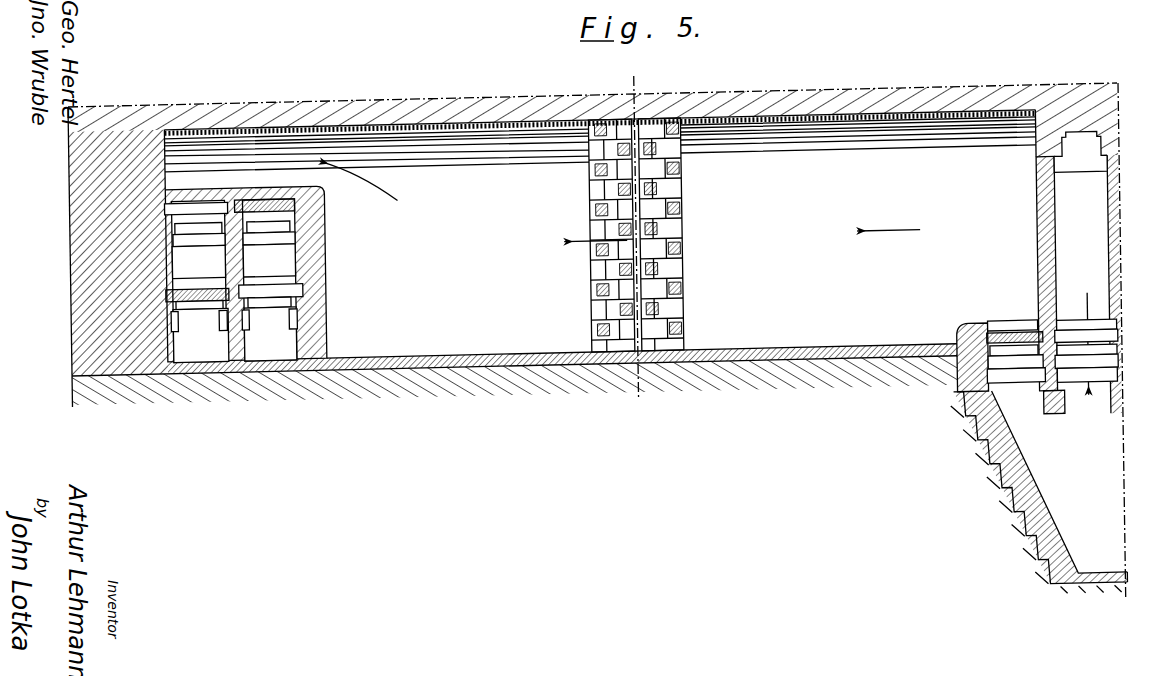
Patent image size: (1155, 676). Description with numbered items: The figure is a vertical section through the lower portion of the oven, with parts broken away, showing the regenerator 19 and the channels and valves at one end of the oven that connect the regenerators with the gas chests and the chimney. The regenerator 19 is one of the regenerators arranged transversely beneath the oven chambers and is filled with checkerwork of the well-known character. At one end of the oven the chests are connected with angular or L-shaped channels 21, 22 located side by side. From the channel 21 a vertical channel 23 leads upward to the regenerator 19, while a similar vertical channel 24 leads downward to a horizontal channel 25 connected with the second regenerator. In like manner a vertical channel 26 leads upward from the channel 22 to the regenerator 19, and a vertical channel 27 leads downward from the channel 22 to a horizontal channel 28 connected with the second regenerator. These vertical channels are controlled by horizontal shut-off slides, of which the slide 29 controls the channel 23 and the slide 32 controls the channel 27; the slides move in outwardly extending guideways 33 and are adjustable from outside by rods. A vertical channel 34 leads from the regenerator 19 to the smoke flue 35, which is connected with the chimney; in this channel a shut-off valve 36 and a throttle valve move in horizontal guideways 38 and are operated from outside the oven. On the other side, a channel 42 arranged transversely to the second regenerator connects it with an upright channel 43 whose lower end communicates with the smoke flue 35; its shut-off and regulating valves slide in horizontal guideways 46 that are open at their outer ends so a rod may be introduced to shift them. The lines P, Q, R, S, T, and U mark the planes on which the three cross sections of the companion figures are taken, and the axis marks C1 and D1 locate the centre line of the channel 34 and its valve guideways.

The regenerator 19 is at (640, 234).
The angular channel 21 is at (258, 274).
The angular channel 22 is at (199, 260).
The vertical channel 23 is at (268, 203).
The vertical channel 24 is at (269, 260).
The horizontal channel 25 is at (270, 334).
The vertical channel 26 is at (196, 189).
The vertical channel 27 is at (234, 321).
The horizontal channel 28 is at (201, 335).
The shut-off slide 29 is at (292, 205).
The shut-off slide 32 is at (174, 354).
The guideway 33 is at (295, 291).
The vertical channel 34 is at (1007, 316).
The smoke flue 35 is at (1039, 492).
The shut-off valve 36 is at (956, 340).
The guideway 38 is at (982, 380).
The channel 42 is at (1078, 261).
The upright channel 43 is at (1101, 320).
The guideway 46 is at (1104, 358).
The section line P—Q P is at (177, 99).
The section line R—S R is at (251, 98).
The section line P— Q is at (188, 411).
The section line R— S is at (261, 410).
The section line T—U T is at (1082, 96).
The section line T— U is at (1095, 578).
The axis C1 is at (1015, 336).
The axis D1 is at (1019, 418).